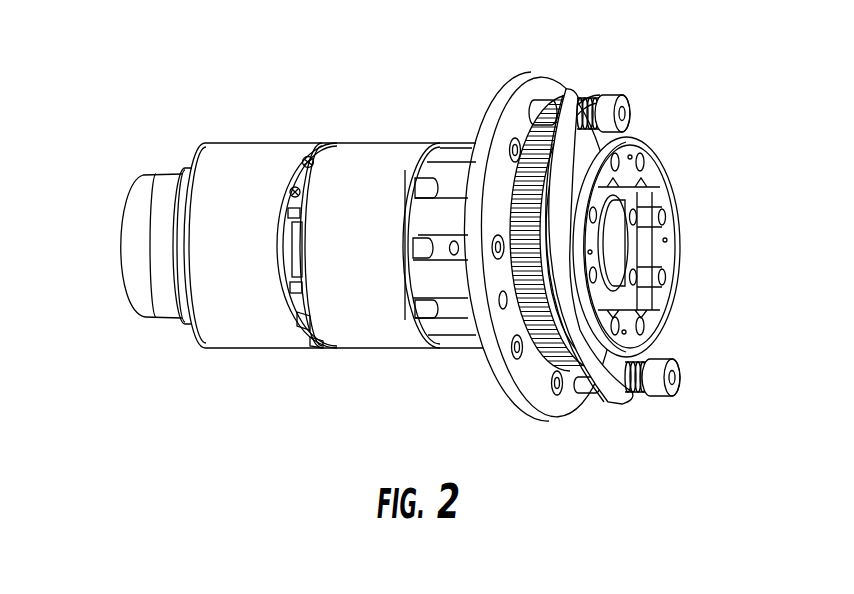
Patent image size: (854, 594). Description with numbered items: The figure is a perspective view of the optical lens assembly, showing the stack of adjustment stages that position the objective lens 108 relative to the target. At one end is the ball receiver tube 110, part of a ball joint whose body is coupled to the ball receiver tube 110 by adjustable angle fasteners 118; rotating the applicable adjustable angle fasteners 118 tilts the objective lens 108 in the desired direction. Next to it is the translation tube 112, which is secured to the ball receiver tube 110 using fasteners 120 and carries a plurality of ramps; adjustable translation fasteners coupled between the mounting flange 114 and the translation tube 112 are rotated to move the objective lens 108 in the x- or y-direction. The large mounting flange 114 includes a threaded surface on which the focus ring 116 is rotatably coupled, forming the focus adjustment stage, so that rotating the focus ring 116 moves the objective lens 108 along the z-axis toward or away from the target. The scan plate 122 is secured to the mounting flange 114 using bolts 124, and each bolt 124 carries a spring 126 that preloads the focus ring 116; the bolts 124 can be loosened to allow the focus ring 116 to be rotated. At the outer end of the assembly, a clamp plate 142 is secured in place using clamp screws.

The objective lens 108 is at (157, 175).
The ball receiver tube 110 is at (358, 143).
The translation tube 112 is at (445, 150).
The mounting flange 114 is at (538, 80).
The focus ring 116 is at (548, 370).
The adjustable angle fasteners 118 is at (421, 180).
The fasteners 120 is at (425, 238).
The scan plate 122 is at (578, 100).
The bolts 124 is at (637, 108).
The spring 126 is at (603, 98).
The clamp plate 142 is at (651, 162).